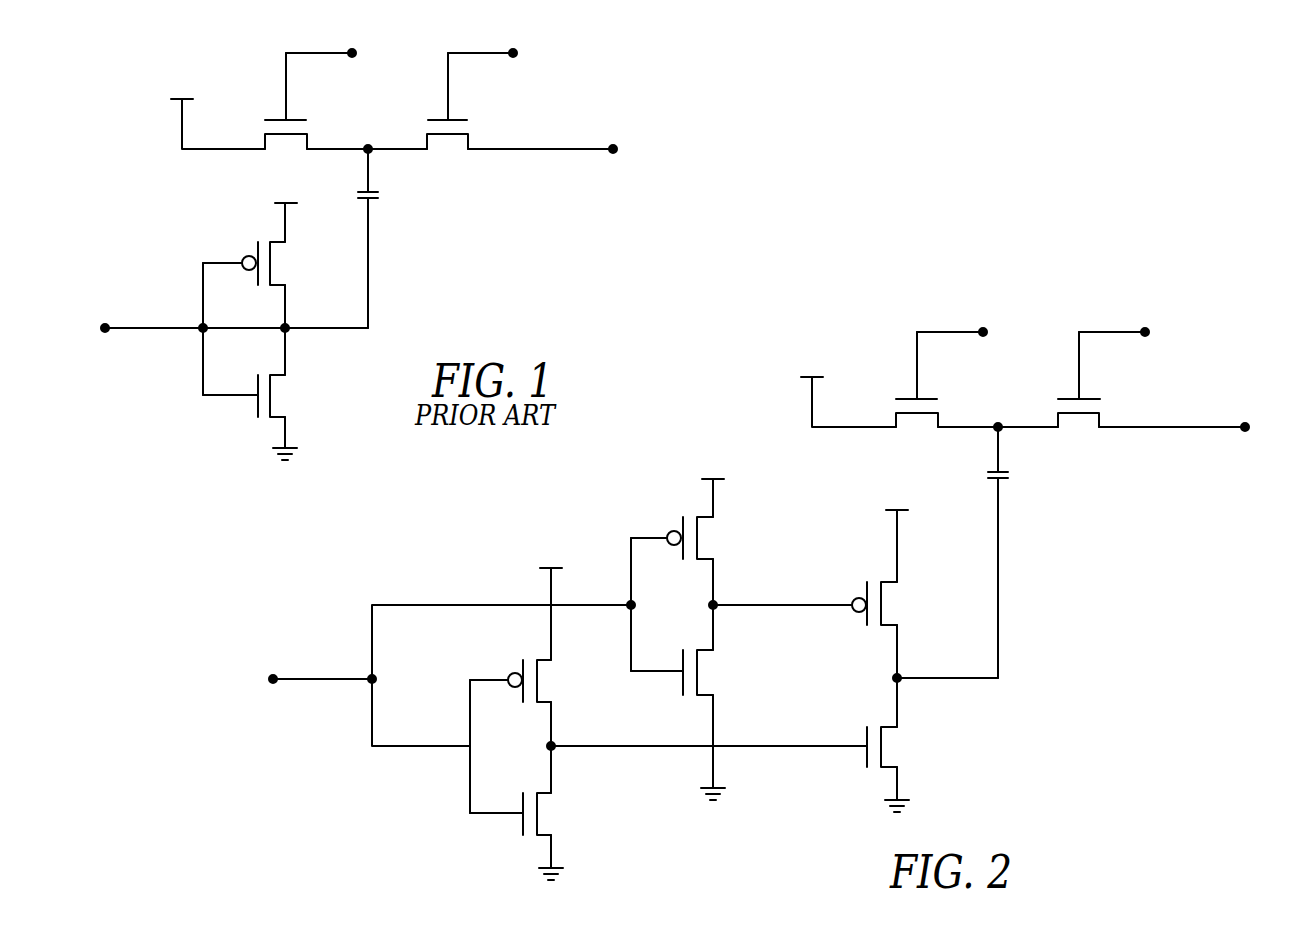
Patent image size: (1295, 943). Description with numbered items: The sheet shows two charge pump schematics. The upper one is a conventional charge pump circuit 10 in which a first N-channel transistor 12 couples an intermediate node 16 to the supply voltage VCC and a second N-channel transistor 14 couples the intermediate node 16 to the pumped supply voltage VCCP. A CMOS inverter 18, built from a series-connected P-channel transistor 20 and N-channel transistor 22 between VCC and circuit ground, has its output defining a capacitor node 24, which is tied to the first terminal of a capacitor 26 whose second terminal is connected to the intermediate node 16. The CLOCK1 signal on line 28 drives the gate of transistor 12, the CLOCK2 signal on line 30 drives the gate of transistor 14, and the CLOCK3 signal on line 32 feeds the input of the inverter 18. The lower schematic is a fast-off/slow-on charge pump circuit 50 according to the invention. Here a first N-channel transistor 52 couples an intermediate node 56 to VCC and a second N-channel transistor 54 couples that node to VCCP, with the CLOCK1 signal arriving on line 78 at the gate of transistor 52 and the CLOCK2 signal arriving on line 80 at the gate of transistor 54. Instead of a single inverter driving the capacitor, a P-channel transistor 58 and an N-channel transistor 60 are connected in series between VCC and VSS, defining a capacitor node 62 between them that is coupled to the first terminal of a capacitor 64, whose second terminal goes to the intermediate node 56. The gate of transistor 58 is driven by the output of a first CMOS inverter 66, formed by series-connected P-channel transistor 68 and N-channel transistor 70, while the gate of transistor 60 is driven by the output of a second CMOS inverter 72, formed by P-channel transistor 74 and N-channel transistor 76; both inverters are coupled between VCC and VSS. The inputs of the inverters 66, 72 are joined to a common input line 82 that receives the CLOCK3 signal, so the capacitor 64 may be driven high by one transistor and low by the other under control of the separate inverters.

In FIG. 1, the conventional charge pump circuit 10 is at (490, 305).
In FIG. 1, the first N-channel transistor 12 is at (309, 145).
In FIG. 1, the second N-channel transistor 14 is at (471, 145).
In FIG. 1, the intermediate node 16 is at (371, 146).
In FIG. 1, the CMOS inverter 18 is at (262, 315).
In FIG. 1, the P-channel transistor 20 is at (286, 244).
In FIG. 1, the N-channel transistor 22 is at (286, 378).
In FIG. 1, the capacitor node 24 is at (290, 324).
In FIG. 1, the capacitor 26 is at (378, 194).
In FIG. 1, the line 28 is at (352, 55).
In FIG. 1, the line 30 is at (513, 55).
In FIG. 1, the line 32 is at (105, 330).
In FIG. 2, the charge pump circuit 50 is at (1037, 795).
In FIG. 2, the first N-channel transistor 52 is at (940, 425).
In FIG. 2, the second N-channel transistor 54 is at (1102, 425).
In FIG. 2, the intermediate node 56 is at (1000, 426).
In FIG. 2, the P-channel transistor 58 is at (898, 584).
In FIG. 2, the N-channel transistor 60 is at (898, 729).
In FIG. 2, the capacitor node 62 is at (900, 675).
In FIG. 2, the capacitor 64 is at (1008, 474).
In FIG. 2, the first CMOS inverter 66 is at (687, 624).
In FIG. 2, the P-channel transistor 68 is at (714, 519).
In FIG. 2, the N-channel transistor 70 is at (714, 652).
In FIG. 2, the second CMOS inverter 72 is at (529, 709).
In FIG. 2, the P-channel transistor 74 is at (552, 662).
In FIG. 2, the N-channel transistor 76 is at (552, 795).
In FIG. 2, the line 78 is at (983, 334).
In FIG. 2, the line 80 is at (1145, 334).
In FIG. 2, the common input line 82 is at (273, 681).